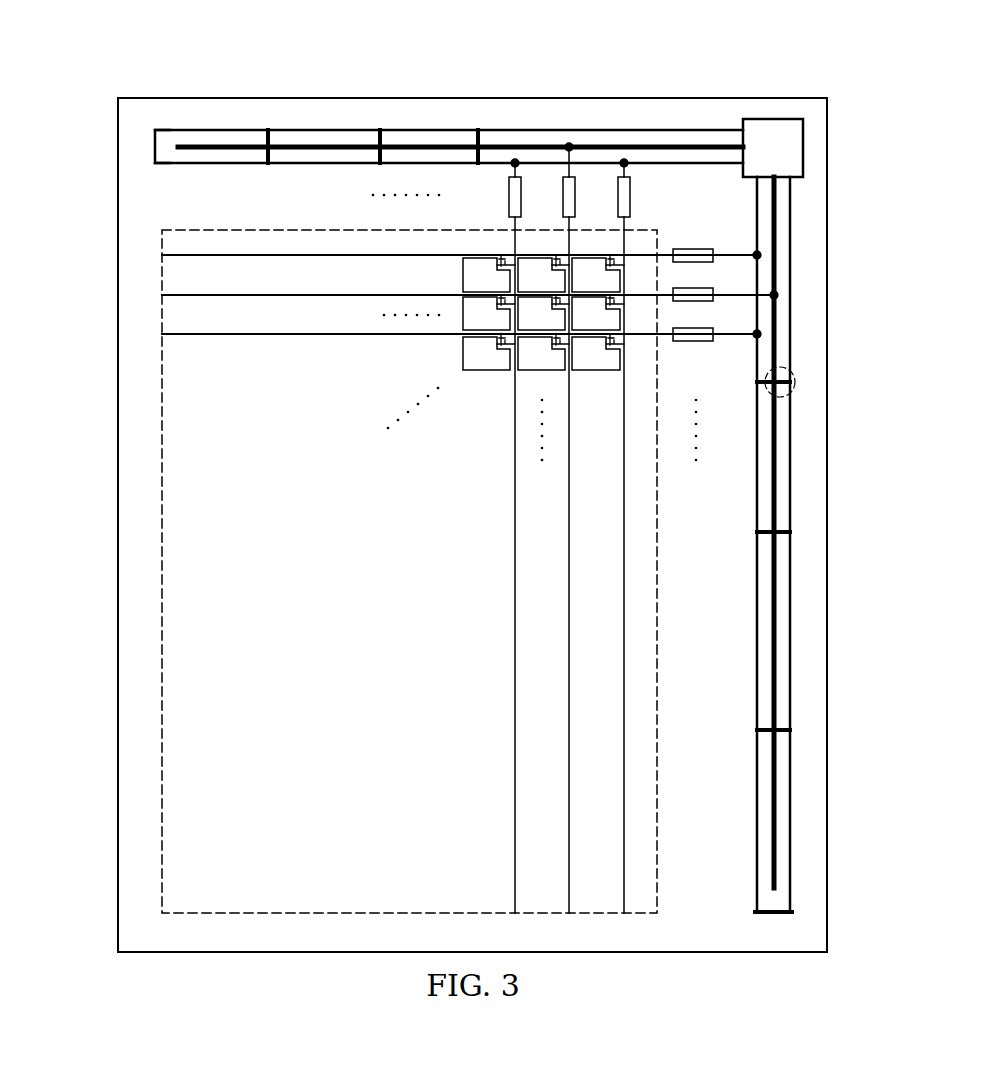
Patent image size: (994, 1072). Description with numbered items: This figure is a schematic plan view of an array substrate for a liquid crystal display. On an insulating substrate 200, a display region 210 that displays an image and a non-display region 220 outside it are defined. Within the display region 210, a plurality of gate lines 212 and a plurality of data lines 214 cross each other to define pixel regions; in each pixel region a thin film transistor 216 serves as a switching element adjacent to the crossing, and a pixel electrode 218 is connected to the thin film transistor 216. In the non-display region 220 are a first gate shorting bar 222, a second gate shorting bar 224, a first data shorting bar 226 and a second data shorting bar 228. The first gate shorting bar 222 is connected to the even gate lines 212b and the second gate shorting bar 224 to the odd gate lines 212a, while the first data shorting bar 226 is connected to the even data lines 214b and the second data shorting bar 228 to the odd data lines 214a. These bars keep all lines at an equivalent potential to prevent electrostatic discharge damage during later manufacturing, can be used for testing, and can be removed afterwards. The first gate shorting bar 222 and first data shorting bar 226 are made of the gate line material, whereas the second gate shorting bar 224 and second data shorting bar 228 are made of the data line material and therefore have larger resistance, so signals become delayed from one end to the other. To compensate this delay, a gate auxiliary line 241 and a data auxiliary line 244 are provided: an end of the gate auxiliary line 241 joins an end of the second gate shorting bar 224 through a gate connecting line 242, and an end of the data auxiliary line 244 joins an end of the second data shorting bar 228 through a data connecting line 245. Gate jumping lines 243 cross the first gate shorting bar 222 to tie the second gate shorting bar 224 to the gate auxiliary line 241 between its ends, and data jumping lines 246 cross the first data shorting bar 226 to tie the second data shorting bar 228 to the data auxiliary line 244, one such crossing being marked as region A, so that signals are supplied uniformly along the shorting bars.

The insulating substrate 200 is at (828, 836).
The display region 210 is at (184, 812).
The non-display region 220 is at (137, 712).
The gate lines 212 is at (712, 770).
The odd gate lines 212a is at (625, 768).
The even gate lines 212b is at (570, 805).
The data lines 214 is at (267, 195).
The odd data lines 214a is at (208, 252).
The even data lines 214b is at (258, 292).
The thin film transistor 216 is at (493, 344).
The pixel electrode 218 is at (463, 353).
The first gate shorting bar 222 is at (432, 145).
The second gate shorting bar 224 is at (328, 160).
The first data shorting bar 226 is at (778, 423).
The second data shorting bar 228 is at (757, 490).
The gate auxiliary line 241 is at (300, 130).
The gate connecting line 242 is at (162, 148).
The gate jumping lines 243 is at (263, 138).
The data auxiliary line 244 is at (792, 612).
The data connecting line 245 is at (777, 905).
The data jumping lines 246 is at (780, 373).
The enlarged region A is at (797, 380).